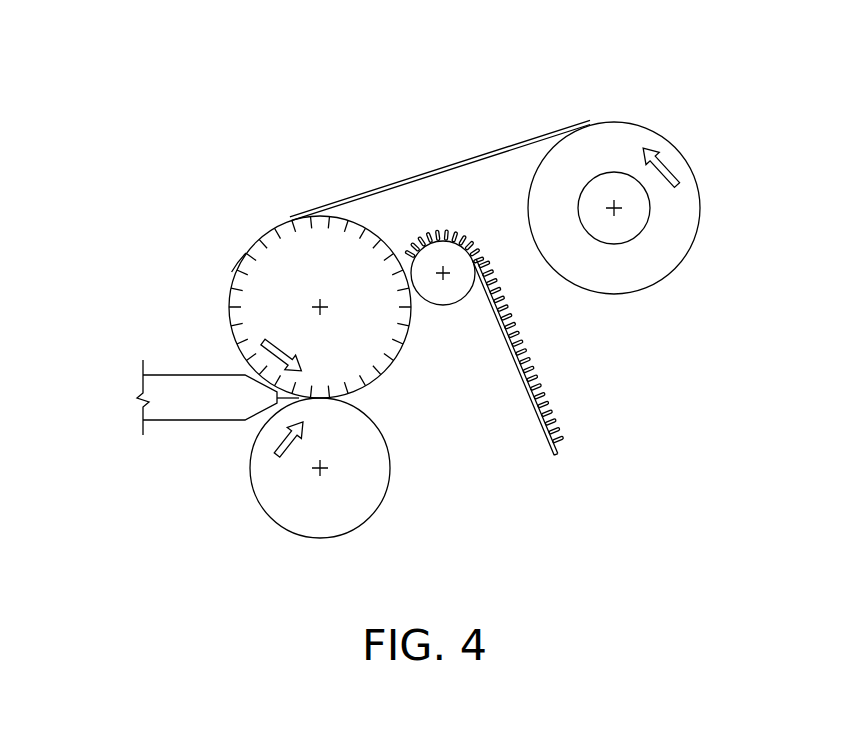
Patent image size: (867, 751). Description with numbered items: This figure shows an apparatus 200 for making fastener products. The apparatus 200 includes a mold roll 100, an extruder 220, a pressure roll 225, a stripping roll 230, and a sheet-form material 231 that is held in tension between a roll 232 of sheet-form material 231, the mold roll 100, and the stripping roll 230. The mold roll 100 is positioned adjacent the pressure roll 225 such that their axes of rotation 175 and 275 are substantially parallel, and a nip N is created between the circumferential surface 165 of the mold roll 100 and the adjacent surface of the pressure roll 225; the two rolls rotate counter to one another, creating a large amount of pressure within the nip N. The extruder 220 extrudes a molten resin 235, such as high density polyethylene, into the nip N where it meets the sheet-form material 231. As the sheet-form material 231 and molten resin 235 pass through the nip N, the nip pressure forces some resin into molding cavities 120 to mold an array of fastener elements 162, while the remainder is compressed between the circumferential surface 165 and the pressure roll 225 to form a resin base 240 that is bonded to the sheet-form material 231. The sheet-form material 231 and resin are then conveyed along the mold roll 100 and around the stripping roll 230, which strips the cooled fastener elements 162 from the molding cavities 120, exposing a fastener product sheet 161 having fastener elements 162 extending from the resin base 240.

The apparatus 200 is at (176, 80).
The mold roll 100 is at (246, 241).
The molding cavities 120 is at (239, 272).
The circumferential surface 165 is at (228, 285).
The axis of rotation 175 is at (320, 307).
The extruder 220 is at (175, 410).
The molten resin 235 is at (284, 404).
The axis of rotation 275 is at (320, 468).
The pressure roll 225 is at (348, 512).
The stripping roll 230 is at (445, 306).
The sheet-form material 231 is at (437, 175).
The roll of sheet-form material 232 is at (675, 232).
The resin base 240 is at (531, 398).
The fastener elements 162 is at (538, 366).
The fastener product sheet 161 is at (538, 454).
The nip N is at (353, 398).